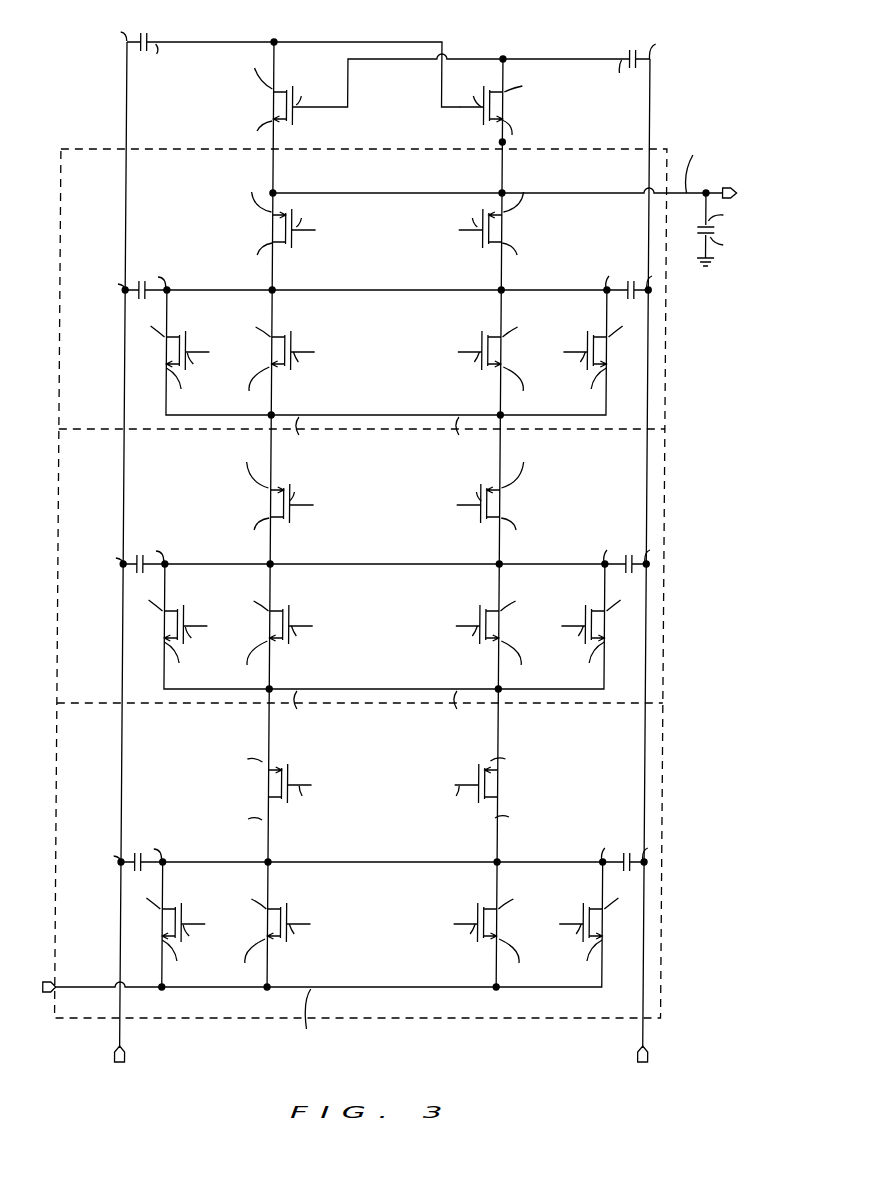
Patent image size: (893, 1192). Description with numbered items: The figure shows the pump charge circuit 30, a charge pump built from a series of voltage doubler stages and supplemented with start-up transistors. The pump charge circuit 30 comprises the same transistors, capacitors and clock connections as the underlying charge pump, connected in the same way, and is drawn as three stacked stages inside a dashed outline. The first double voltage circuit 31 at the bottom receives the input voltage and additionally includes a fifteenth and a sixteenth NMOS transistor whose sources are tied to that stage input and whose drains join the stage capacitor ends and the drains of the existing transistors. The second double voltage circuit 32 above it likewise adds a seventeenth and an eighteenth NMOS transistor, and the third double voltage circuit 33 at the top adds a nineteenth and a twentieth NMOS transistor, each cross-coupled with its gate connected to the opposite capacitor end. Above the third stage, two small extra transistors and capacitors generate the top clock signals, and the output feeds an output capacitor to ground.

The pump charge circuit 30 is at (675, 1033).
The first double voltage circuit 31 is at (393, 910).
The second double voltage circuit 32 is at (396, 634).
The third double voltage circuit 33 is at (398, 360).